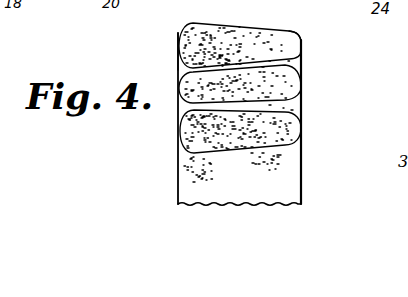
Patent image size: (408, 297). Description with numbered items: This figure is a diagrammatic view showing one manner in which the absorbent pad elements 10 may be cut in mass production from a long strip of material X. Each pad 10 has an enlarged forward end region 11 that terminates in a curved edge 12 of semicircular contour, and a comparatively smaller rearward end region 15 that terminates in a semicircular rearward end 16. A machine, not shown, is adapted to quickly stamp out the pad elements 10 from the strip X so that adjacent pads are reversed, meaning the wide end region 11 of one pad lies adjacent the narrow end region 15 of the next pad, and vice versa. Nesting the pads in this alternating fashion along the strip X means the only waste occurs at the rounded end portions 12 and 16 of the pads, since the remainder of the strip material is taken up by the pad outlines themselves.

The pad 10 is at (183, 40).
The enlarged forward end region 11 is at (182, 52).
The curved edge 12 is at (191, 24).
The rearward end region 15 is at (291, 42).
The semicircular rearward end 16 is at (302, 53).
The strip of material x is at (298, 165).